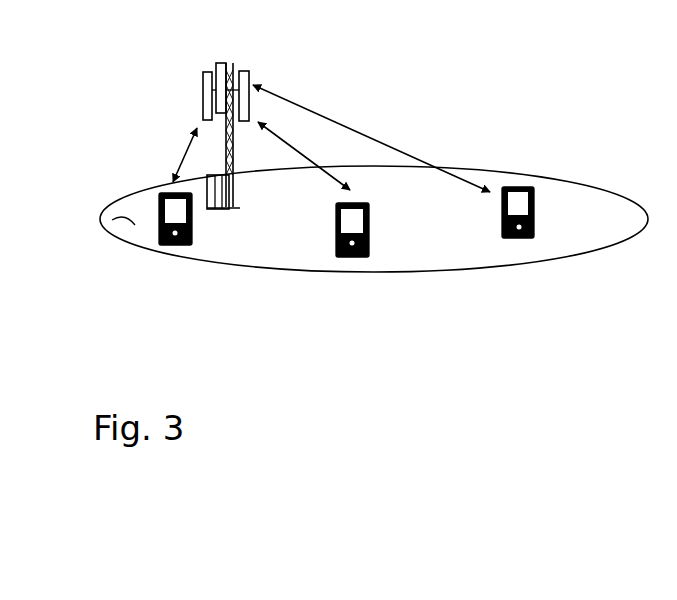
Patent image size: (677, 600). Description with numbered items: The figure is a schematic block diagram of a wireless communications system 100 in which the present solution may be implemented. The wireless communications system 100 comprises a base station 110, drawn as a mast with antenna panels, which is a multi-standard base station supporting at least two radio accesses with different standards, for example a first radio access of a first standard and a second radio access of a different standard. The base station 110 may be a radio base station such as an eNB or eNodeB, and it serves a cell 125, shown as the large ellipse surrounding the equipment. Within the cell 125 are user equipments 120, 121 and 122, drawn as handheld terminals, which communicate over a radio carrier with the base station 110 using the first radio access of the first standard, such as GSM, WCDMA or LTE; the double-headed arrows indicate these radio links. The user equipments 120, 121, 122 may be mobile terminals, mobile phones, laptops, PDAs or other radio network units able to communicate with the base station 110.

The wireless communications system 100 is at (500, 298).
The base station 110 is at (207, 58).
The user equipment 120 is at (333, 257).
The user equipment 121 is at (155, 230).
The user equipment 122 is at (500, 222).
The cell 125 is at (112, 220).